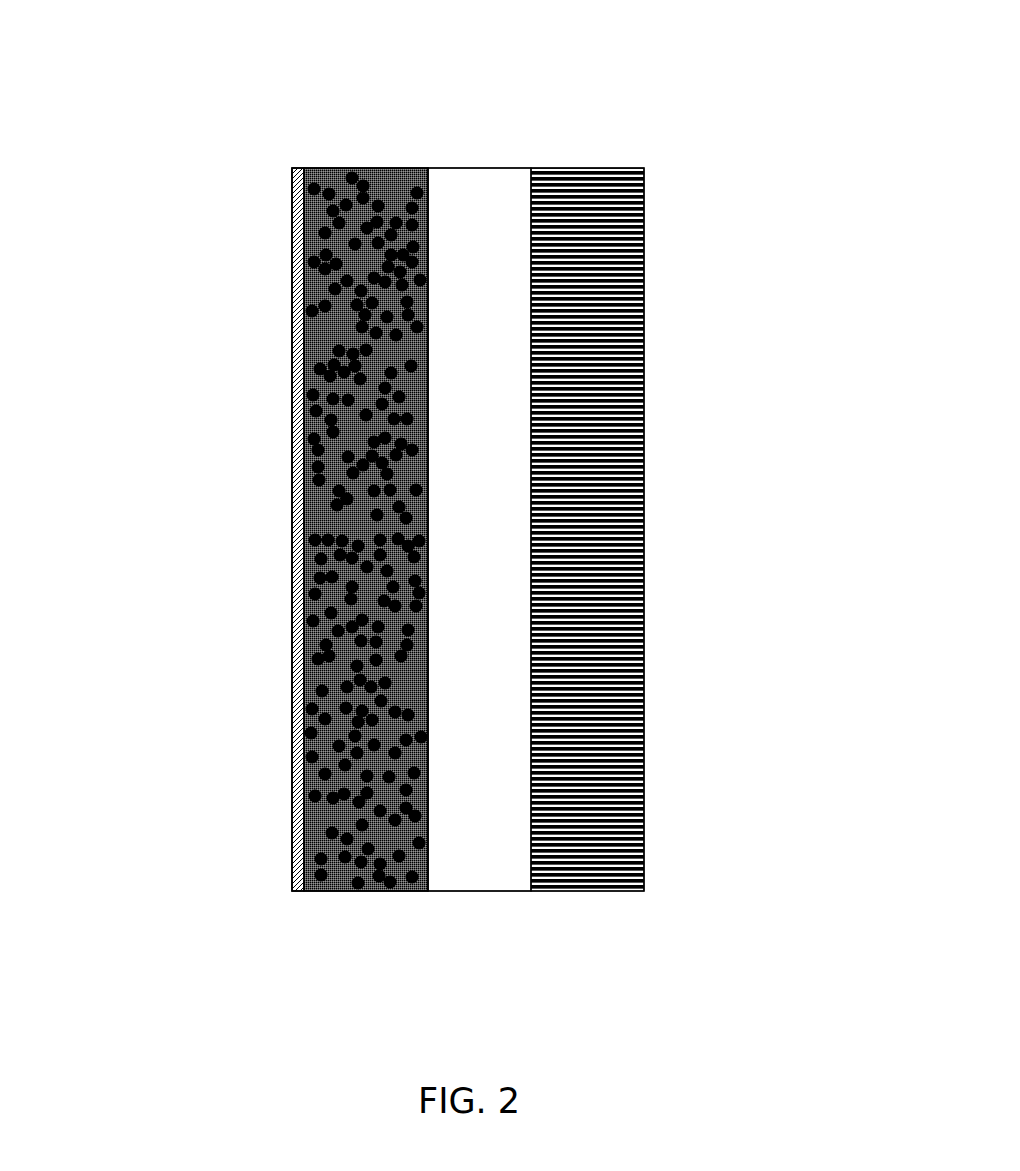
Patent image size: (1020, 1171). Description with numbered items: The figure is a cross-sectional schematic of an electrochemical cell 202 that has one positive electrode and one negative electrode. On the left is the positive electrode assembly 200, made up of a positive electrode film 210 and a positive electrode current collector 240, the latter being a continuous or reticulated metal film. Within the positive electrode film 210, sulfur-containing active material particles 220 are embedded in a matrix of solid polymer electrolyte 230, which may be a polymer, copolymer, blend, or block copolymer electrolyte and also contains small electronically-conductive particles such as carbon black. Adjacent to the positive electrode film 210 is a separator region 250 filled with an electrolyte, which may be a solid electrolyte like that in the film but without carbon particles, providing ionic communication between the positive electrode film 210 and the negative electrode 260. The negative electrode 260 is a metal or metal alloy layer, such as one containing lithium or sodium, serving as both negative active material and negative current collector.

The electrochemical cell 202 is at (218, 117).
The positive electrode assembly 200 is at (418, 155).
The positive electrode film 210 is at (418, 887).
The positive electrode sulfur-containing active material particles 220 is at (296, 307).
The solid polymer electrolyte 230 is at (318, 426).
The positive electrode current collector 240 is at (288, 703).
The separator region 250 is at (473, 190).
The negative electrode 260 is at (583, 373).